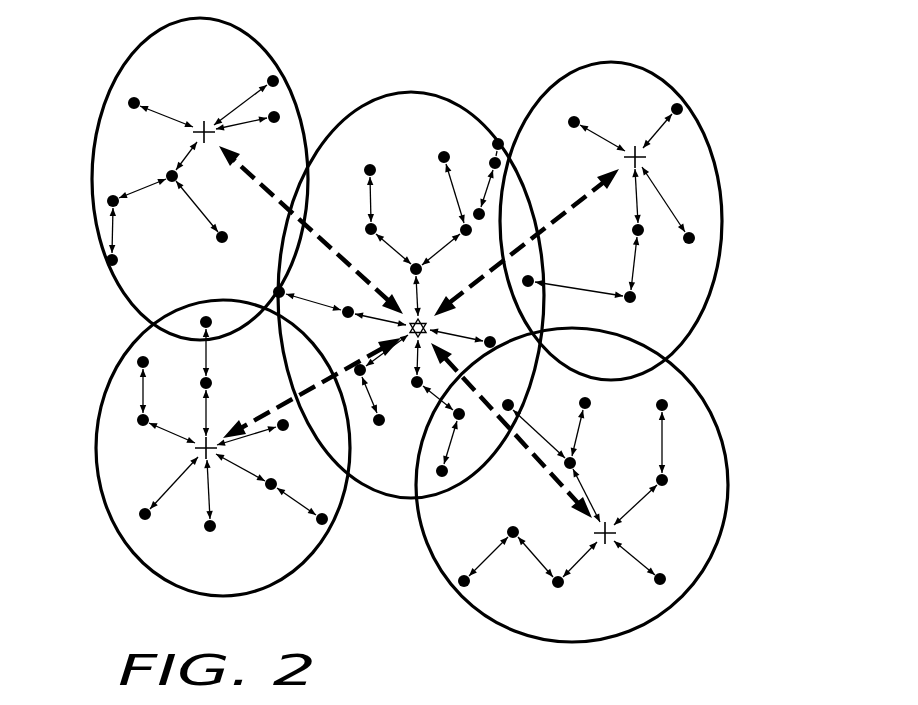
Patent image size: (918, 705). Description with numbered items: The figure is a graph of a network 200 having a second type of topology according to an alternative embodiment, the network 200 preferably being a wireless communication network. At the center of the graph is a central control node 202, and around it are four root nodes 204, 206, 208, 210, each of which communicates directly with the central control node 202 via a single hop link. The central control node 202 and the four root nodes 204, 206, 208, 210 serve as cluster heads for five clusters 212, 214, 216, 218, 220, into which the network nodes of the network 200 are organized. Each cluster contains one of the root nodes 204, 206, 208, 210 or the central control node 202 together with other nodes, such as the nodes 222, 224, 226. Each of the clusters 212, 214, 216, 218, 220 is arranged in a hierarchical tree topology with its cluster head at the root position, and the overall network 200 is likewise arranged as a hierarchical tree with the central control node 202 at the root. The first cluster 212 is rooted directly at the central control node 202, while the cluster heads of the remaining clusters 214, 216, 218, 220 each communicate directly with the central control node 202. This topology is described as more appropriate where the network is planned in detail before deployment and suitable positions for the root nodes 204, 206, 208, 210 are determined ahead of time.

The network 200 is at (108, 614).
The central control node 202 is at (413, 340).
The root node 204 is at (200, 127).
The root node 206 is at (628, 152).
The root node 208 is at (620, 531).
The root node 210 is at (195, 447).
The first cluster 212 is at (404, 93).
The cluster 214 is at (155, 32).
The cluster 216 is at (714, 162).
The cluster 218 is at (714, 420).
The cluster 220 is at (110, 378).
The other node 222 is at (112, 194).
The other node 224 is at (695, 234).
The other node 226 is at (470, 588).